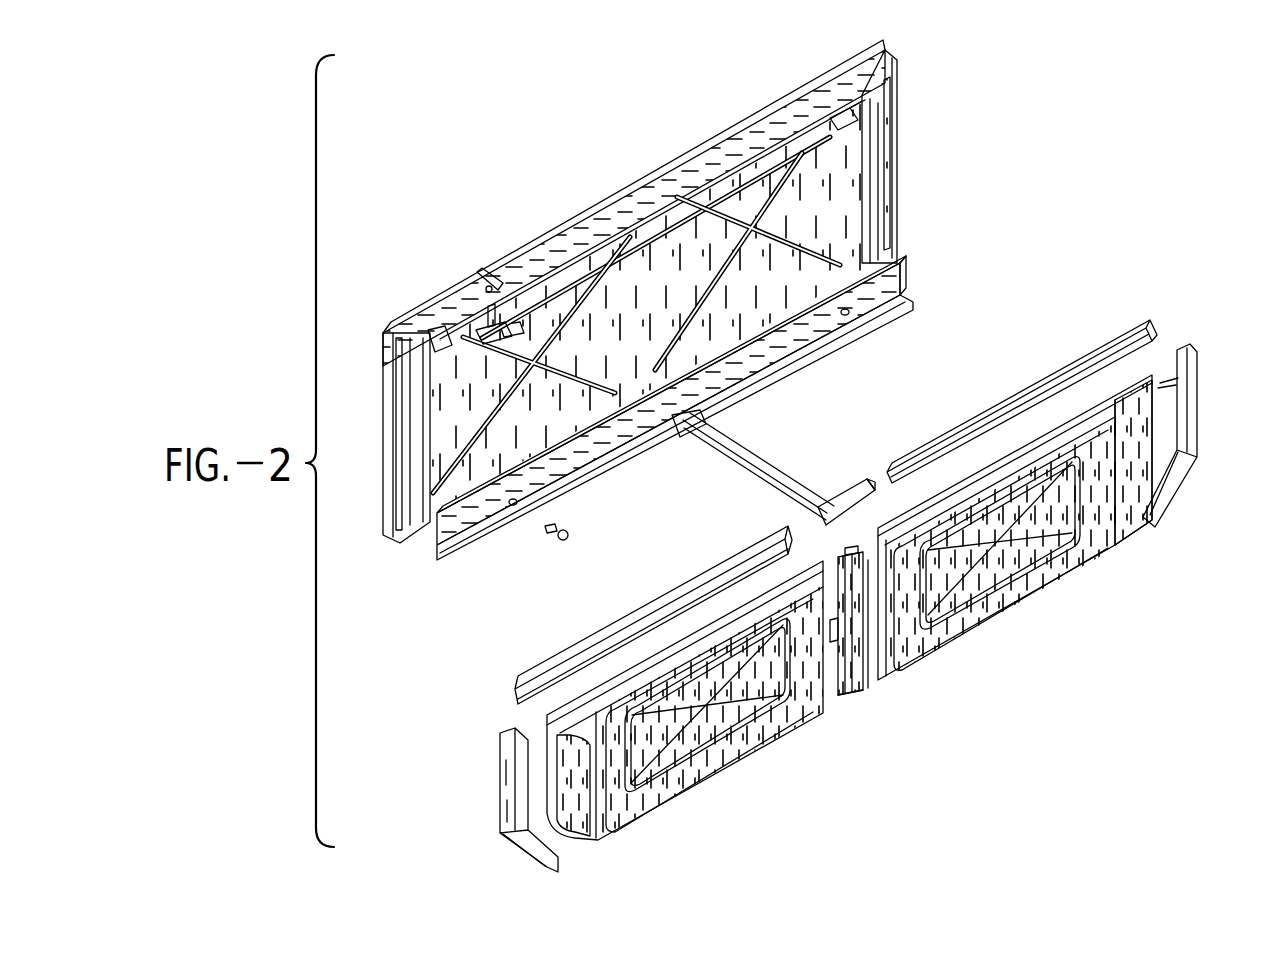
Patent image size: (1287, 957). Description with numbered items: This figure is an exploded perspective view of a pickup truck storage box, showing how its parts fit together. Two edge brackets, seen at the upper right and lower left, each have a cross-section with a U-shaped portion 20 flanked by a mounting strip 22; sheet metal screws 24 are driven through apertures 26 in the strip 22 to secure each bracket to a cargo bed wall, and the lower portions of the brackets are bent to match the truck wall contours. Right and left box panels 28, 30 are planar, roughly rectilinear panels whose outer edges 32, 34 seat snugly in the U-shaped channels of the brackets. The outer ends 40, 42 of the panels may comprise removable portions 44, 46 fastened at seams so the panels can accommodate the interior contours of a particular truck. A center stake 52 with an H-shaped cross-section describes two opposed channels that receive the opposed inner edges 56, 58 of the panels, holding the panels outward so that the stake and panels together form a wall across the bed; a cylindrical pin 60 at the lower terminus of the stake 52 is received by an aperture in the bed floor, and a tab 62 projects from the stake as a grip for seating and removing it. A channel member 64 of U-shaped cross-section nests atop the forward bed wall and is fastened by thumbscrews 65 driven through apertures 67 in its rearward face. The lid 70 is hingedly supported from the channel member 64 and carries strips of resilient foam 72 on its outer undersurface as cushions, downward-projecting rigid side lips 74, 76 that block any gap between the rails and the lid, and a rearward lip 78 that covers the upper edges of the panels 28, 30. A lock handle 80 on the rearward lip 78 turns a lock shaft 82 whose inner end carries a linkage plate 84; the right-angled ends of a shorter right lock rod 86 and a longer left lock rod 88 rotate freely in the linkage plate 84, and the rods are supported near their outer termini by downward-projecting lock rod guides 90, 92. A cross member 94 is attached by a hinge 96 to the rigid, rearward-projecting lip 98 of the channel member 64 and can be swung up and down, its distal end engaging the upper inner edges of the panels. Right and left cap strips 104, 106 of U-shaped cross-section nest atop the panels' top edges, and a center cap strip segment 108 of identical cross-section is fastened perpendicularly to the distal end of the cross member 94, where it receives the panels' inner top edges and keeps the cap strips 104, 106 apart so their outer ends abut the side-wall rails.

The U-shaped portion 20 is at (515, 725).
The mounting strip 22 is at (495, 740).
The sheet metal screws 24 is at (528, 858).
The apertures 26 is at (505, 772).
The right box panel 28 is at (718, 790).
The left box panel 30 is at (1052, 605).
The outer edge 32 is at (535, 800).
The outer edge 34 is at (1162, 392).
The outer end 40 is at (540, 750).
The outer end 42 is at (1195, 380).
The removable portion 44 is at (593, 815).
The removable portion 46 is at (1123, 515).
The center stake 52 is at (863, 690).
The inner edge 56 is at (830, 557).
The inner edge 58 is at (880, 640).
The cylindrical pin 60 is at (853, 700).
The tab 62 is at (835, 640).
The channel member 64 is at (900, 290).
The thumbscrews 65 is at (563, 538).
The apertures 67 is at (520, 503).
The lid 70 is at (656, 330).
The strips of resilient foam 72 is at (888, 190).
The side lip 74 is at (408, 443).
The side lip 76 is at (880, 175).
The rearward lip 78 is at (700, 165).
The lock handle 80 is at (478, 272).
The lock shaft 82 is at (500, 318).
The linkage plate 84 is at (512, 336).
The right lock rod 86 is at (465, 342).
The left lock rod 88 is at (623, 258).
The lock rod guide 90 is at (450, 348).
The lock rod guide 92 is at (840, 140).
The cross member 94 is at (745, 468).
The hinge 96 is at (700, 440).
The rearward-projecting lip 98 is at (850, 318).
The right cap strip 104 is at (600, 635).
The left cap strip 106 is at (1060, 368).
The center cap strip segment 108 is at (853, 488).